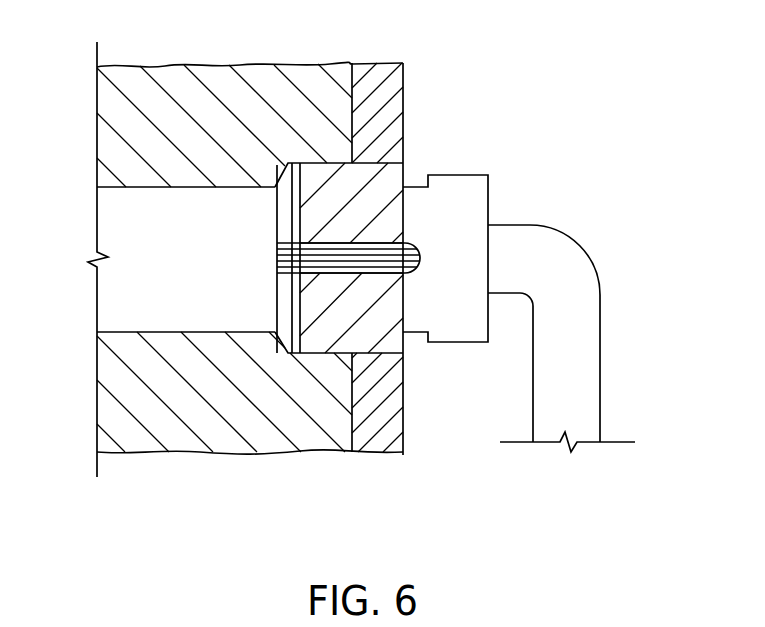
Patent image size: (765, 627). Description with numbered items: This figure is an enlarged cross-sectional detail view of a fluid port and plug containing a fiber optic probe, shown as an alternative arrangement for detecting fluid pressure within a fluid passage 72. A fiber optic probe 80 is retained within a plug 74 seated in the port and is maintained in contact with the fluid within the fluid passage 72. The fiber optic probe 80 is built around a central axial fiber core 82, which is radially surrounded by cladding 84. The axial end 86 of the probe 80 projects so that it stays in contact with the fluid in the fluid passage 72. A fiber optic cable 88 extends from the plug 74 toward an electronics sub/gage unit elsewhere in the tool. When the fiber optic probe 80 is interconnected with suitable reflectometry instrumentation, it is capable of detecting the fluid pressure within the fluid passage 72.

The fluid passage 72 is at (176, 276).
The plug 74 is at (313, 341).
The fiber optic probe 80 is at (344, 226).
The central axial fiber core 82 is at (405, 245).
The cladding 84 is at (363, 274).
The axial end 86 is at (277, 252).
The fiber optic cable 88 is at (583, 342).